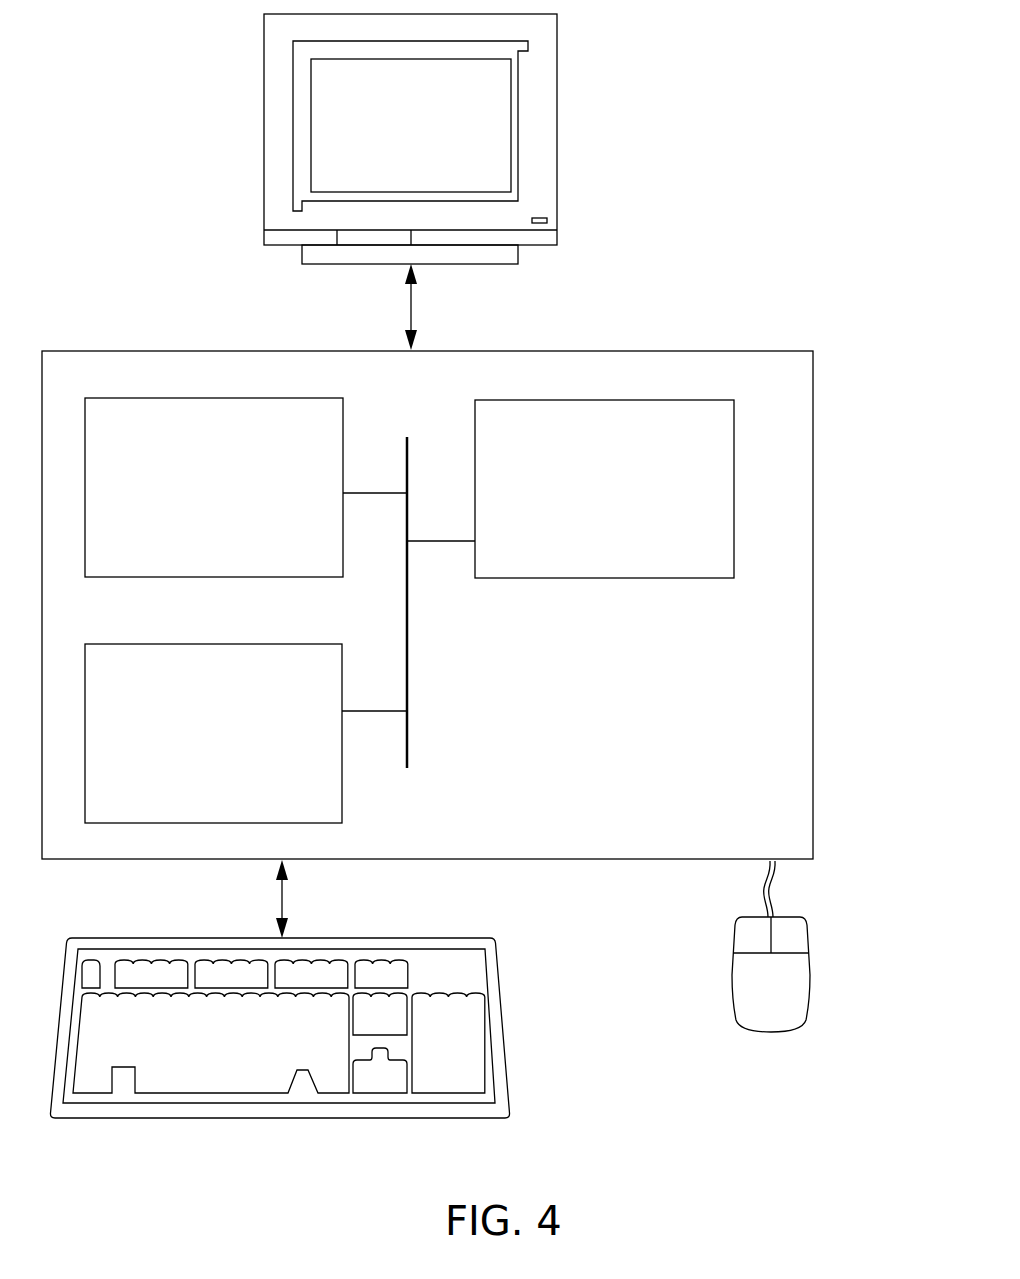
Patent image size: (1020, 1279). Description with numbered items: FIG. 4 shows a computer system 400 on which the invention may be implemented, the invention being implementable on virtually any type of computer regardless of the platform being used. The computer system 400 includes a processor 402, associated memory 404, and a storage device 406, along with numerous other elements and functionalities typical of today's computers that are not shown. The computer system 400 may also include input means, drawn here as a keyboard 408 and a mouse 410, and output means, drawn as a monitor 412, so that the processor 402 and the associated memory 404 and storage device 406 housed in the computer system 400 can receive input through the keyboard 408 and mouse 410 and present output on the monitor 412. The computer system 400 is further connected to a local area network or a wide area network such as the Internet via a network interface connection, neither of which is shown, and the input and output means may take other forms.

The computer system 400 is at (835, 190).
The processor 402 is at (190, 500).
The associated memory 404 is at (187, 746).
The storage device 406 is at (577, 503).
The keyboard 408 is at (210, 1056).
The mouse 410 is at (748, 1000).
The monitor 412 is at (387, 142).